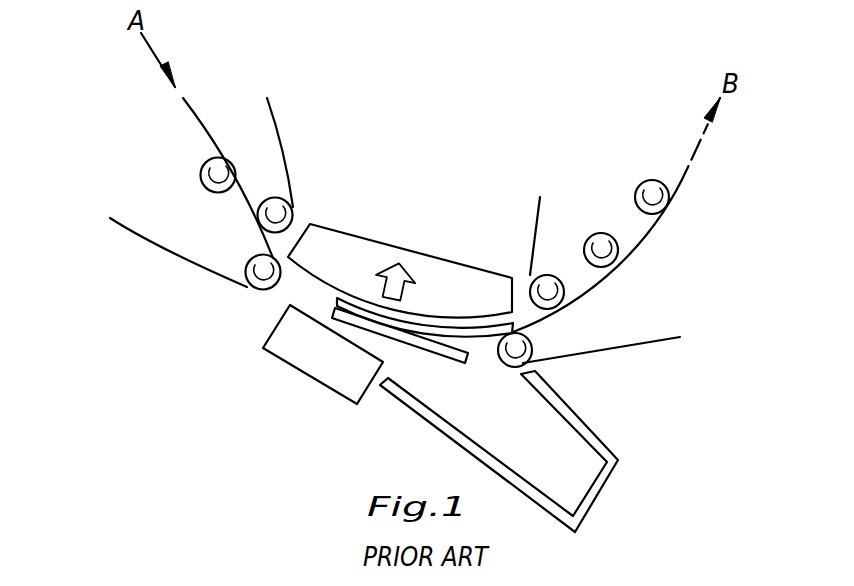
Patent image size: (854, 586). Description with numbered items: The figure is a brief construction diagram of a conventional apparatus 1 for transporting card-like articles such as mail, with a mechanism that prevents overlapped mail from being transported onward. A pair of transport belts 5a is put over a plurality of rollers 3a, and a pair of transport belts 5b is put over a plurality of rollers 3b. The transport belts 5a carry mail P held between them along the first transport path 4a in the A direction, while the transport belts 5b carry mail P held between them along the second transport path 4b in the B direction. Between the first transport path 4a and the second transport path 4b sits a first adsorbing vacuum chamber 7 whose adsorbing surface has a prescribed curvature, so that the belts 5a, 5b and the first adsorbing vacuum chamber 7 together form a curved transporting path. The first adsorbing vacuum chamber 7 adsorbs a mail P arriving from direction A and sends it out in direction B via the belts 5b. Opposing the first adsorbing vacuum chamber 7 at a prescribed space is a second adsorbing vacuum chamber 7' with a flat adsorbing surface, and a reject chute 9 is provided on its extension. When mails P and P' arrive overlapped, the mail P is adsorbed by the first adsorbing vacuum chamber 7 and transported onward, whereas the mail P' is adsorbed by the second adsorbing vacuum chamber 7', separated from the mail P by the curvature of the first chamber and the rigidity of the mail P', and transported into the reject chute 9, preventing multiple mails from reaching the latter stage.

The apparatus for transporting mail 1 is at (252, 412).
The rollers 3a is at (200, 175).
The rollers 3b is at (670, 192).
The first transport path 4a is at (196, 118).
The second transport path 4b is at (655, 224).
The transport belts 5a is at (278, 135).
The transport belts 5b is at (535, 220).
The first adsorbing vacuum chamber 7 is at (400, 264).
The second adsorbing vacuum chamber 7' is at (323, 378).
The reject chute 9 is at (600, 492).
The mail P is at (425, 352).
The mail P' is at (401, 358).